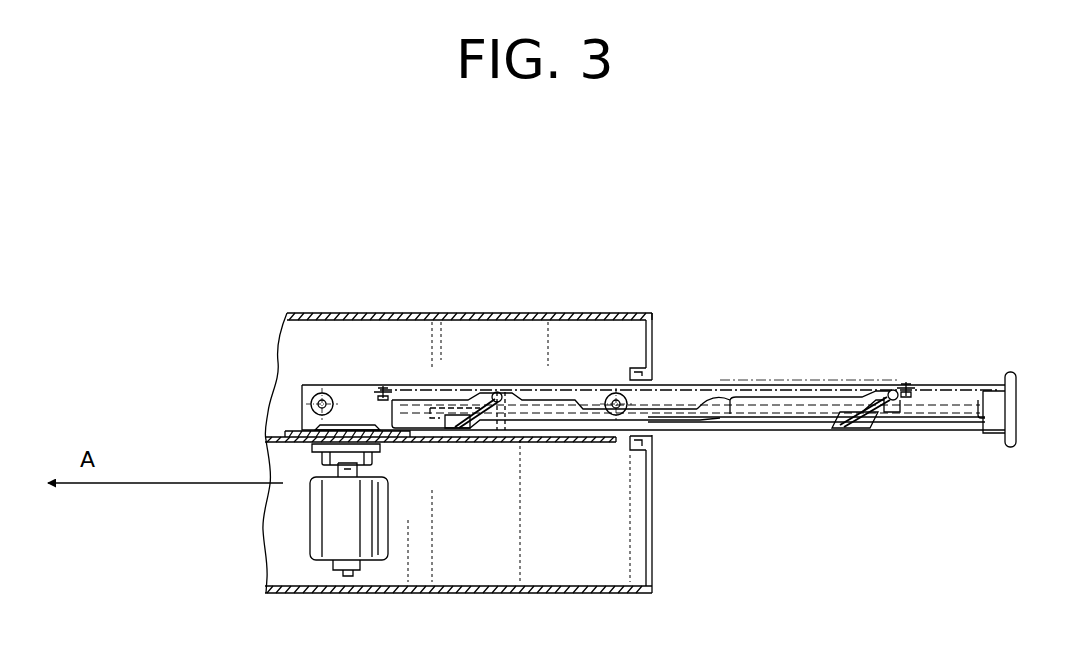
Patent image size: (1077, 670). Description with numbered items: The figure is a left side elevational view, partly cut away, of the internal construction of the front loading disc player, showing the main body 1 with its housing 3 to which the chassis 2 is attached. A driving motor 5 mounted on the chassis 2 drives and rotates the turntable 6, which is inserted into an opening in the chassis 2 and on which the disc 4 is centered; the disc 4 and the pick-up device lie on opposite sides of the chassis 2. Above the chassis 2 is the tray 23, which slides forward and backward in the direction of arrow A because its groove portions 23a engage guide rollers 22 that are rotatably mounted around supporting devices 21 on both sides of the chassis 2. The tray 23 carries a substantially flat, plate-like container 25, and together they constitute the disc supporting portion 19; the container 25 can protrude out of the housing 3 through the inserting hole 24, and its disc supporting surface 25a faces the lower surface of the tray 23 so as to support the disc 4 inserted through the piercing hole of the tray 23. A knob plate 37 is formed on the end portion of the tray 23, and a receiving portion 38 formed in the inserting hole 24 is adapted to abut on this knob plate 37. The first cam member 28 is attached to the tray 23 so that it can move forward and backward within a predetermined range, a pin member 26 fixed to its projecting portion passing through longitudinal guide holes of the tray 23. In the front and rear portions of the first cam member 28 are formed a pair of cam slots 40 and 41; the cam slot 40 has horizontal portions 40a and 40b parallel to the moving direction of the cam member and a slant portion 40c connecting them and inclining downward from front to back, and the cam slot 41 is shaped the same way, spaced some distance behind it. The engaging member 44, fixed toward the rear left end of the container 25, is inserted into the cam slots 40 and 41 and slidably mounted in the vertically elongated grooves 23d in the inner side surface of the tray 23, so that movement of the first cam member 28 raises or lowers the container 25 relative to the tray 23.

The main body 1 is at (653, 301).
The chassis 2 is at (597, 444).
The housing 3 is at (456, 311).
The disc 4 is at (698, 407).
The driving motor 5 is at (312, 538).
The turntable 6 is at (400, 449).
The disc supporting portion 19 is at (820, 378).
The supporting devices 21 is at (322, 393).
The guide rollers 22 is at (312, 398).
The tray 23 is at (750, 384).
The groove portions 23a is at (990, 433).
The grooves 23d is at (511, 440).
The inserting hole 24 is at (655, 445).
The container 25 is at (770, 397).
The disc supporting surface 25a is at (706, 417).
The pin member 26 is at (384, 390).
The first cam member 28 is at (793, 423).
The knob plate 37 is at (1013, 410).
The receiving portion 38 is at (650, 376).
The cam slot 40 is at (845, 428).
The horizontal portion 40a is at (896, 413).
The horizontal portion 40b is at (828, 426).
The slant portion 40c is at (868, 414).
The cam slot 41 is at (472, 428).
The engaging member 44 is at (500, 392).